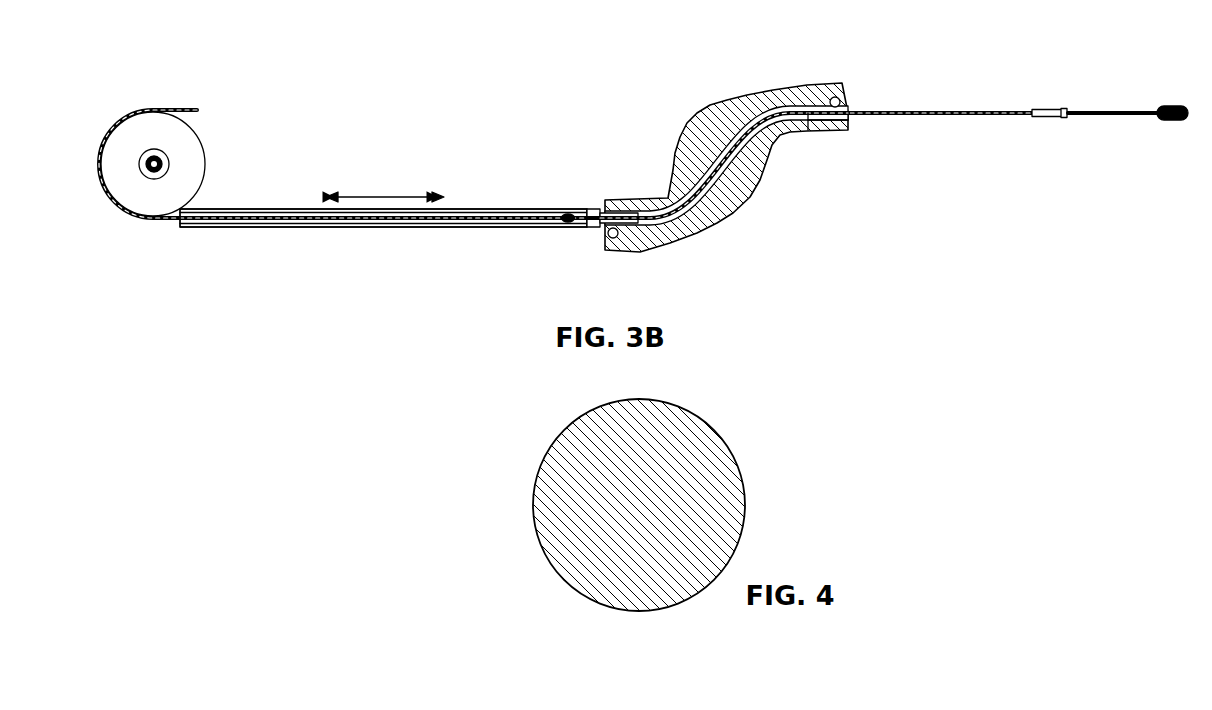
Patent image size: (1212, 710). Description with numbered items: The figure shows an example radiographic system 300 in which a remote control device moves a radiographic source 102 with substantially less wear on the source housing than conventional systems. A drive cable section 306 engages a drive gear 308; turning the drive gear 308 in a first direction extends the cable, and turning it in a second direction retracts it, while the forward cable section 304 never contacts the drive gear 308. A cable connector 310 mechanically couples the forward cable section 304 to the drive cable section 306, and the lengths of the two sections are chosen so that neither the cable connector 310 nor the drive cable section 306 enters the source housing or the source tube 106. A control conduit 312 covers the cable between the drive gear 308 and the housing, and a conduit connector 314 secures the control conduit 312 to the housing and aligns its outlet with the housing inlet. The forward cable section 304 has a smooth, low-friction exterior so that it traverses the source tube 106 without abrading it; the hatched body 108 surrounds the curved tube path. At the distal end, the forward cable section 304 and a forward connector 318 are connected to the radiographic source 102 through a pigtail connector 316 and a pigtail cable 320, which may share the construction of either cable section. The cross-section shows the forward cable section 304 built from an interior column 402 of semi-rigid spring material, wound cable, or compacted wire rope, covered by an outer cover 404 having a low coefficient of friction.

In FIG. 3B, the radiographic system 300 is at (195, 44).
In FIG. 3B, the radiographic source 102 is at (1172, 106).
In FIG. 3B, the source tube 106 is at (798, 140).
In FIG. 3B, the housing 108 is at (704, 113).
In FIG. 3B, the forward cable section 304 is at (952, 118).
In FIG. 4, the forward cable section 304 is at (565, 375).
In FIG. 3B, the drive cable section 306 is at (258, 213).
In FIG. 3B, the drive gear 308 is at (118, 157).
In FIG. 3B, the cable connector 310 is at (569, 216).
In FIG. 3B, the control conduit 312 is at (470, 228).
In FIG. 3B, the conduit connector 314 is at (590, 228).
In FIG. 3B, the pigtail connector 316 is at (1058, 108).
In FIG. 3B, the forward connector 318 is at (1042, 118).
In FIG. 3B, the pigtail cable 320 is at (1123, 118).
In FIG. 4, the interior column 402 is at (557, 531).
In FIG. 4, the outer cover 404 is at (550, 447).